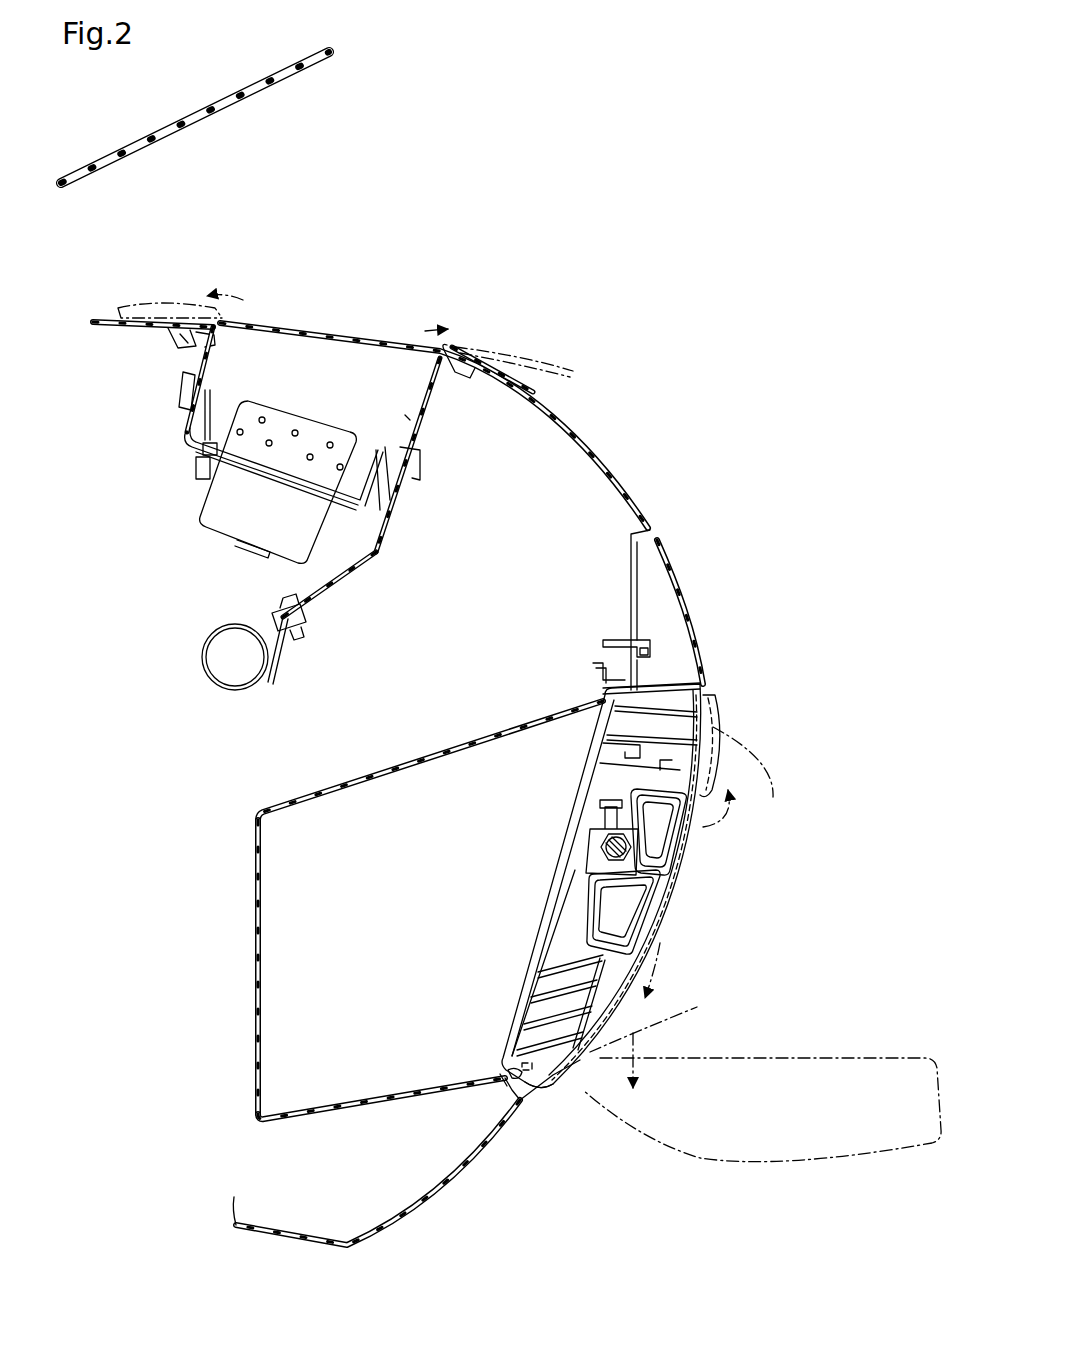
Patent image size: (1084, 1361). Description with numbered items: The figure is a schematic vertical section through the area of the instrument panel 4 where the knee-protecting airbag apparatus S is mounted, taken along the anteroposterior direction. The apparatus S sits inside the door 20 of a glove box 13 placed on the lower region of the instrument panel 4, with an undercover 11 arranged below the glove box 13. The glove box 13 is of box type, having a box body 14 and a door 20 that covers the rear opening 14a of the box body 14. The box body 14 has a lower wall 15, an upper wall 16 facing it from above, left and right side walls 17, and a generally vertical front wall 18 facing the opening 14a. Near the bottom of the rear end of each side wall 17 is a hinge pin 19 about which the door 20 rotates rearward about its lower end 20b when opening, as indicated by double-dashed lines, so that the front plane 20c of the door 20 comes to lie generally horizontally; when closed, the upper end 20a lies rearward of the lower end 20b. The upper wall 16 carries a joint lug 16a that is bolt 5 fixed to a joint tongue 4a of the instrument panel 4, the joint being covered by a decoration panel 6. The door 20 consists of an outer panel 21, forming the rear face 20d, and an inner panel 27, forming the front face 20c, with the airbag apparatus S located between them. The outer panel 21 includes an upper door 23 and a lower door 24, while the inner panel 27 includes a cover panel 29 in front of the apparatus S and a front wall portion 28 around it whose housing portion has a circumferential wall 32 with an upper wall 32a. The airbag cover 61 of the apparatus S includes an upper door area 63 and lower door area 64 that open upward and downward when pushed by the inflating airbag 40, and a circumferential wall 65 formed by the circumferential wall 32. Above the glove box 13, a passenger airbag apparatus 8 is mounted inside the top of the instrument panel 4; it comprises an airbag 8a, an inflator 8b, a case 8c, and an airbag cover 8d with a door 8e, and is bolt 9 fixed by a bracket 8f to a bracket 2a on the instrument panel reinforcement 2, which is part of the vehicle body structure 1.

The vehicle body structure 1 is at (200, 650).
The instrument panel reinforcement 2 is at (199, 623).
The bracket 2a is at (273, 643).
The instrument panel 4 is at (562, 415).
The joint tongue 4a is at (627, 593).
The bolt 5 is at (650, 652).
The decoration panel 6 is at (690, 687).
The airbag apparatus for a front passenger's seat 8 is at (441, 257).
The airbag 8a is at (400, 417).
The inflator 8b is at (230, 510).
The case 8c is at (182, 433).
The airbag cover 8d is at (340, 236).
The door 8e is at (293, 323).
The bracket 8f is at (353, 580).
The bolt 9 is at (300, 623).
The undercover 11 is at (440, 1190).
The glove box 13 is at (540, 624).
The box body 14 is at (443, 740).
The opening 14a is at (580, 870).
The lower wall 15 is at (317, 1117).
The upper wall 16 is at (313, 790).
The joint lug 16a is at (640, 640).
The side walls 17 is at (307, 892).
The front wall 18 is at (250, 967).
The hinge pin 19 is at (503, 1063).
The door 20 is at (565, 770).
The upper end 20a is at (722, 690).
The lower end 20b is at (543, 1125).
The front plane 20c is at (575, 905).
The rear face 20d is at (692, 893).
The outer panel 21 is at (575, 1083).
The upper door 23 is at (683, 870).
The lower door 24 is at (660, 937).
The inner panel 27 is at (390, 937).
The front wall portion 28 is at (560, 1000).
The cover panel 29 is at (585, 925).
The circumferential wall 32 is at (772, 788).
The upper wall 32a is at (660, 785).
The airbag 40 is at (660, 930).
The airbag cover 61 is at (720, 801).
The upper door area 63 is at (720, 801).
The lower door area 64 is at (691, 994).
The circumferential wall 65 is at (772, 788).
The knee-protecting airbag apparatus S is at (612, 798).